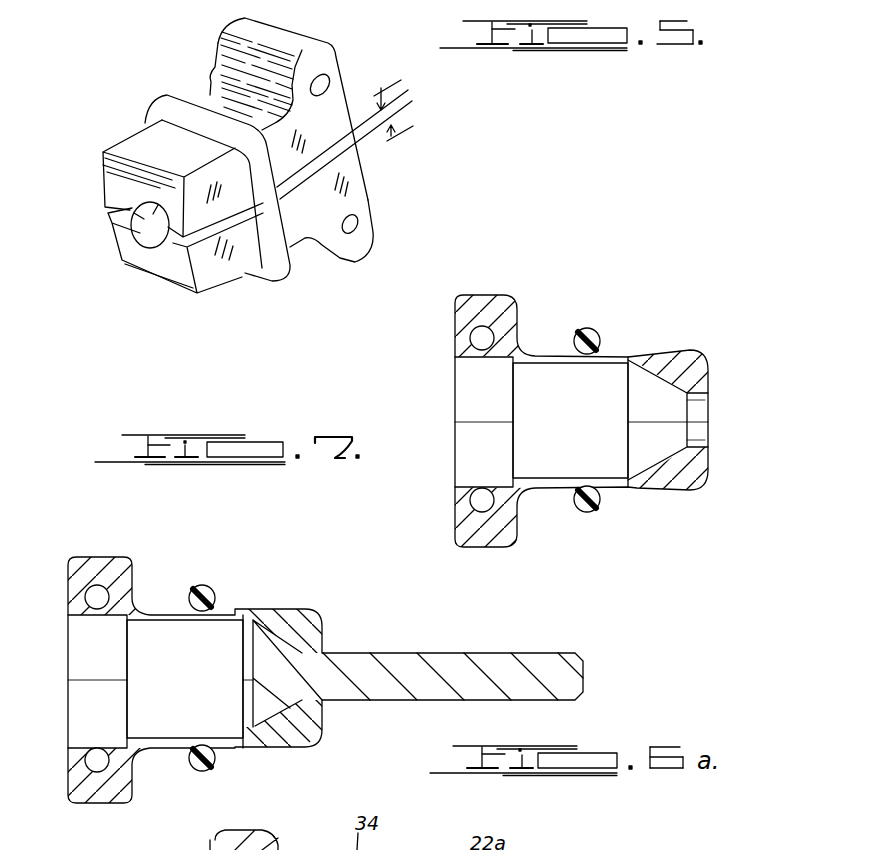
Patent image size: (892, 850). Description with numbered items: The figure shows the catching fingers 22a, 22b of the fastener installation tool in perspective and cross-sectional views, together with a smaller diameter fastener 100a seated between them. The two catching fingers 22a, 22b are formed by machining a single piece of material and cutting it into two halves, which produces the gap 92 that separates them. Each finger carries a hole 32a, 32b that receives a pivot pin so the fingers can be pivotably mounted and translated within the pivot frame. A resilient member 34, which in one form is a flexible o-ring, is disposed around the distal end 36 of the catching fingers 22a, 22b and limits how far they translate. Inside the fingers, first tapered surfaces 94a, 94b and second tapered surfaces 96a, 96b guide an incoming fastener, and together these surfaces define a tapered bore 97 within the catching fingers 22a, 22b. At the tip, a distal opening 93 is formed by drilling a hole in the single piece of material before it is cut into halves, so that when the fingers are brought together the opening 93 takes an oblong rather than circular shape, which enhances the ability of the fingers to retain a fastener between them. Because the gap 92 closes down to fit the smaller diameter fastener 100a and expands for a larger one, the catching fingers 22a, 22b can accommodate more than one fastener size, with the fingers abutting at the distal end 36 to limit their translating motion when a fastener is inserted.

In FIG. 5, the catching finger 22a is at (290, 40).
In FIG. 7, the catching finger 22a is at (637, 350).
In FIG. 8A, the catching finger 22a is at (97, 556).
In FIG. 5, the catching finger 22b is at (358, 252).
In FIG. 7, the catching finger 22b is at (637, 488).
In FIG. 8A, the catching finger 22b is at (92, 805).
In FIG. 5, the hole 32a is at (325, 82).
In FIG. 7, the hole 32a is at (484, 338).
In FIG. 8A, the hole 32a is at (100, 593).
In FIG. 5, the hole 32b is at (357, 225).
In FIG. 7, the hole 32b is at (482, 500).
In FIG. 8A, the hole 32b is at (100, 765).
In FIG. 5, the resilient member 34 is at (272, 274).
In FIG. 7, the resilient member 34 is at (583, 507).
In FIG. 8A, the resilient member 34 is at (205, 593).
In FIG. 5, the distal end 36 is at (108, 178).
In FIG. 5, the gap 92 is at (392, 143).
In FIG. 5, the distal opening 93 is at (140, 232).
In FIG. 7, the distal opening 93 is at (690, 432).
In FIG. 7, the first tapered surface 94a is at (473, 357).
In FIG. 8A, the first tapered surface 94a is at (117, 613).
In FIG. 7, the first tapered surface 94b is at (477, 478).
In FIG. 8A, the first tapered surface 94b is at (112, 745).
In FIG. 7, the second tapered surface 96a is at (656, 382).
In FIG. 7, the second tapered surface 96b is at (663, 453).
In FIG. 7, the tapered bore 97 is at (586, 406).
In FIG. 8A, the tapered bore 97 is at (210, 654).
In FIG. 8A, the smaller diameter fastener 100a is at (580, 670).